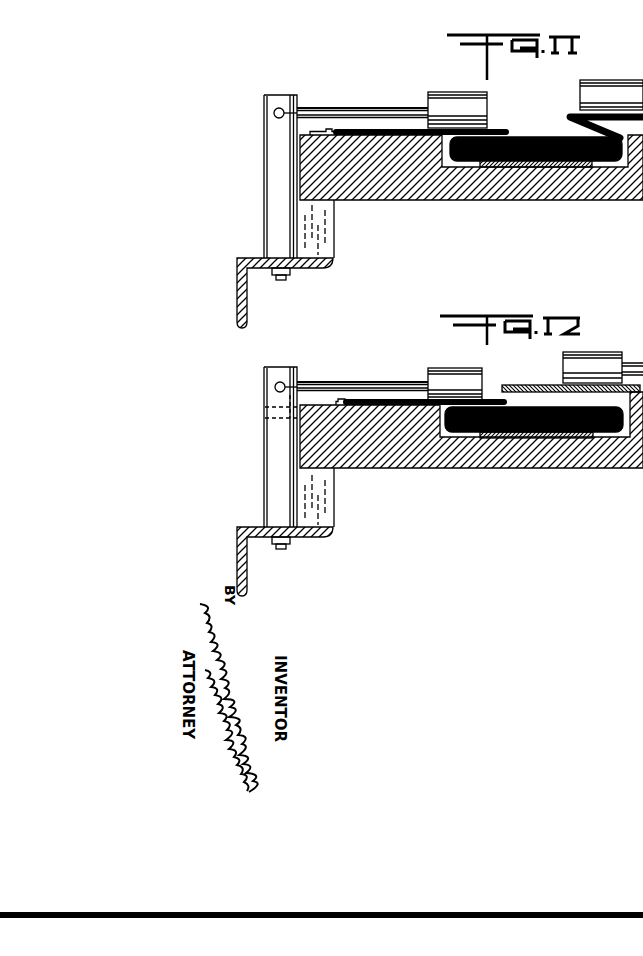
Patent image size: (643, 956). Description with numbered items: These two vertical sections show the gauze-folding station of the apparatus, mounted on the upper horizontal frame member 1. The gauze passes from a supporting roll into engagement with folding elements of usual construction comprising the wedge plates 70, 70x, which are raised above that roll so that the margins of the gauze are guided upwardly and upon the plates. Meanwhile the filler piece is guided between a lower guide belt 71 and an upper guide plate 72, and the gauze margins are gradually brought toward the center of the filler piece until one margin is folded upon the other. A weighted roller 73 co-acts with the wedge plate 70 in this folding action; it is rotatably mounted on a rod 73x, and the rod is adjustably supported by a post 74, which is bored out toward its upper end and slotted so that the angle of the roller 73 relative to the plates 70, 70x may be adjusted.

In FIG. 11, the upper horizontal frame member 1 is at (237, 277).
In FIG. 12, the upper horizontal frame member 1 is at (247, 528).
In FIG. 12, the wedge plate 70 is at (527, 386).
In FIG. 11, the wedge plate 70x is at (392, 129).
In FIG. 12, the wedge plate 70x is at (490, 398).
In FIG. 11, the lower guide belt 71 is at (572, 165).
In FIG. 12, the lower guide belt 71 is at (566, 440).
In FIG. 11, the upper guide plate 72 is at (528, 143).
In FIG. 12, the upper guide plate 72 is at (534, 422).
In FIG. 11, the weighted roller 73 is at (445, 102).
In FIG. 12, the weighted roller 73 is at (446, 372).
In FIG. 11, the rod 73x is at (362, 99).
In FIG. 12, the rod 73x is at (371, 384).
In FIG. 11, the post 74 is at (273, 190).
In FIG. 12, the post 74 is at (273, 449).